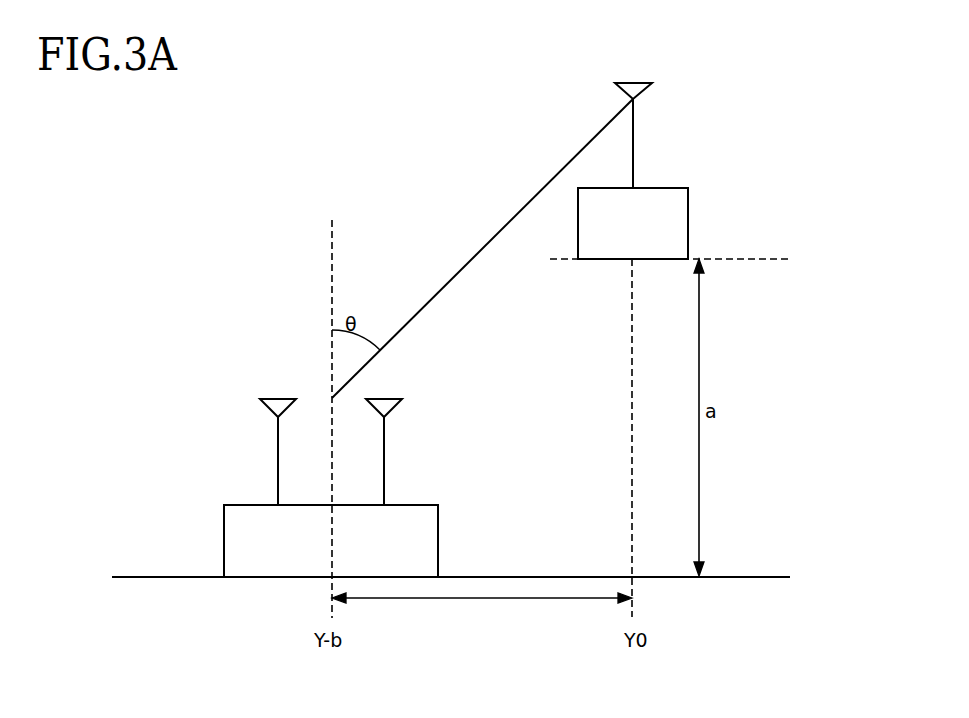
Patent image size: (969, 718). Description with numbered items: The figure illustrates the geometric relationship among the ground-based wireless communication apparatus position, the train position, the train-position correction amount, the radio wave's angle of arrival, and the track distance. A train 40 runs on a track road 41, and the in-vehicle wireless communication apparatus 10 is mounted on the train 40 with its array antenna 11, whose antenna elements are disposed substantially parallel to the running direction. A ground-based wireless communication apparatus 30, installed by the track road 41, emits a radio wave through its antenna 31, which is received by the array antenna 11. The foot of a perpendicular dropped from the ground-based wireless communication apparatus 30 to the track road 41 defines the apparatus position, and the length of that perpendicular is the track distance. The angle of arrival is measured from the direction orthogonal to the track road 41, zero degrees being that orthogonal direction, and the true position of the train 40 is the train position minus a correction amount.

The in-vehicle wireless communication apparatus 10 is at (438, 540).
The train 40 is at (383, 541).
The array antenna 11 is at (400, 400).
The ground-based wireless communication apparatus 30 is at (688, 220).
The antenna 31 is at (644, 85).
The track road 41 is at (154, 576).